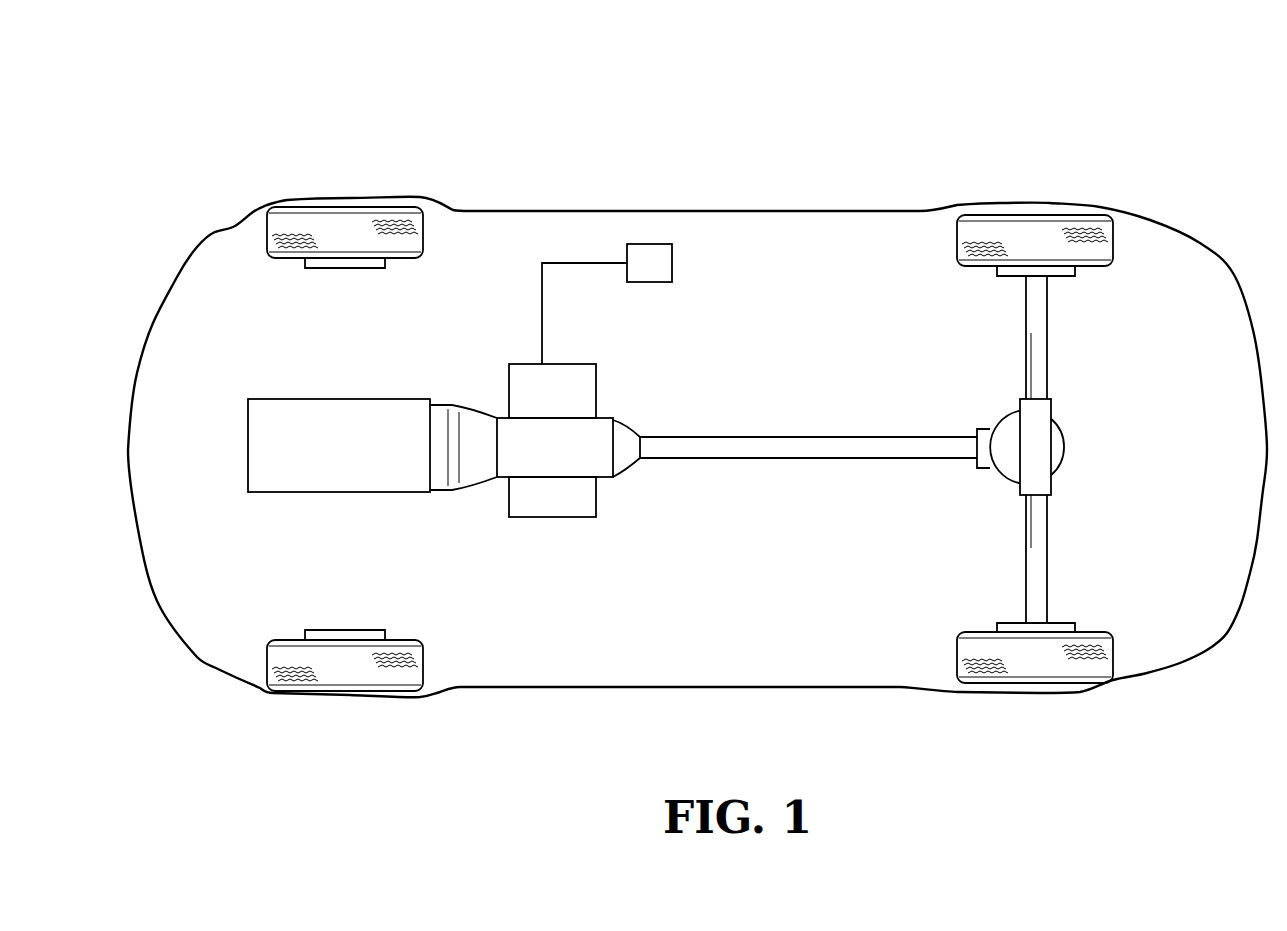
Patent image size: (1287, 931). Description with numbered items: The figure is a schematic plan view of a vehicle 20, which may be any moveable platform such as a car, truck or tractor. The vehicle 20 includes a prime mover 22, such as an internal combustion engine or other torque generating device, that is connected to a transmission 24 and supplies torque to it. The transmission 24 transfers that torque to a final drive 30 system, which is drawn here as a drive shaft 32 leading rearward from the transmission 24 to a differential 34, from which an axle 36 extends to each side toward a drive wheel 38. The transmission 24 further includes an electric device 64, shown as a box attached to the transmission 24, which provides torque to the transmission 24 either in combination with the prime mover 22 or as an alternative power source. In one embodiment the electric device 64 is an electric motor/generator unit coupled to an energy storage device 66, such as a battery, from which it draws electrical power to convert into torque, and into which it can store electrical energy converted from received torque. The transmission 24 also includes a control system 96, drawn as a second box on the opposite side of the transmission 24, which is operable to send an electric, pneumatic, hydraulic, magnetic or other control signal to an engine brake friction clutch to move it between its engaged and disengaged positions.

The vehicle 20 is at (975, 128).
The prime mover 22 is at (279, 417).
The transmission 24 is at (597, 433).
The final drive 30 is at (1039, 435).
The drive shaft 32 is at (725, 443).
The differential 34 is at (1035, 449).
The axle 36 is at (1038, 368).
The drive wheel 38 is at (1093, 252).
The electric device 64 is at (558, 372).
The energy storage device 66 is at (648, 282).
The control system 96 is at (547, 505).